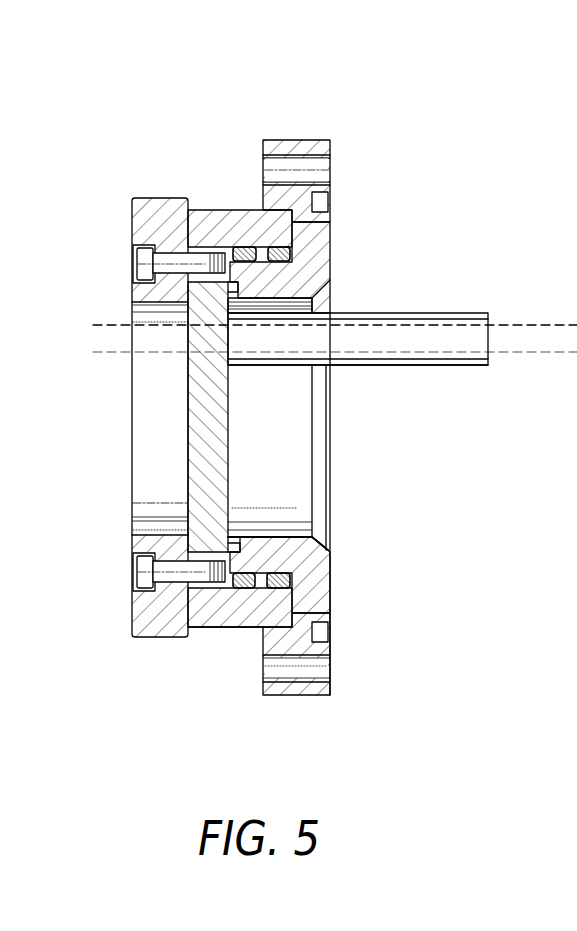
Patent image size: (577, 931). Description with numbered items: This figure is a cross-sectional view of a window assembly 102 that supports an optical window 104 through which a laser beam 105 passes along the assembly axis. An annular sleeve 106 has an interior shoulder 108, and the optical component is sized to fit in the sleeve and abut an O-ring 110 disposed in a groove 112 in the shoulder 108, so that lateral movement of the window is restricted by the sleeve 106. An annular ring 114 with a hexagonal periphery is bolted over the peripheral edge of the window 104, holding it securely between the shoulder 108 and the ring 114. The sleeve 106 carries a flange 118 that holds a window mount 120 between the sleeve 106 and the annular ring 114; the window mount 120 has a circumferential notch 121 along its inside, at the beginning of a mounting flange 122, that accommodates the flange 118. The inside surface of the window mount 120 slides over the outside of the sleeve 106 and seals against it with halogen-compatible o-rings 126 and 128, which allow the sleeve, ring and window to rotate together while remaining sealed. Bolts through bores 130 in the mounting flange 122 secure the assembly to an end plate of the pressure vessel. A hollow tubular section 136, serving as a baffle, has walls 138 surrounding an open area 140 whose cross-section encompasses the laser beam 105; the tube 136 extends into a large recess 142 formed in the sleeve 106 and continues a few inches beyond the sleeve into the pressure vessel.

The window assembly 102 is at (303, 120).
The optical window 104 is at (190, 412).
The laser beam 105 is at (97, 323).
The annular sleeve 106 is at (295, 270).
The interior shoulder 108 is at (270, 540).
The O-ring 110 is at (318, 538).
The groove 112 is at (237, 535).
The annular ring 114 is at (130, 222).
The flange 118 is at (305, 240).
The window mount 120 is at (227, 627).
The circumferential notch 121 is at (312, 603).
The mounting flange 122 is at (328, 648).
The o-rings 126 is at (276, 246).
The lower O-ring seals 128 is at (290, 578).
The bores 130 is at (330, 163).
The hollow tubular section 136 is at (435, 296).
The walls 138 is at (443, 362).
The open area 140 is at (482, 337).
The large recess 142 is at (292, 421).